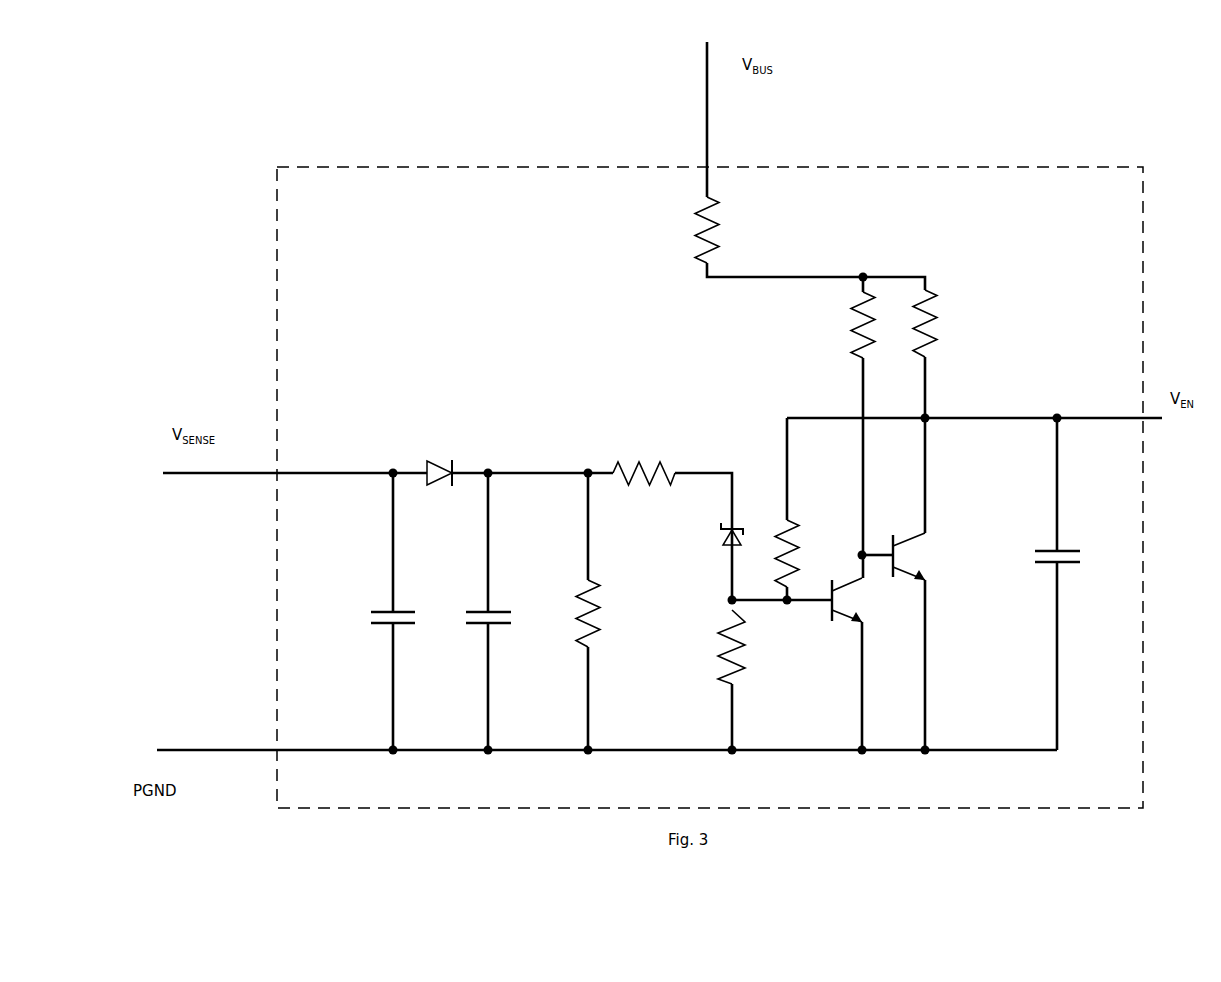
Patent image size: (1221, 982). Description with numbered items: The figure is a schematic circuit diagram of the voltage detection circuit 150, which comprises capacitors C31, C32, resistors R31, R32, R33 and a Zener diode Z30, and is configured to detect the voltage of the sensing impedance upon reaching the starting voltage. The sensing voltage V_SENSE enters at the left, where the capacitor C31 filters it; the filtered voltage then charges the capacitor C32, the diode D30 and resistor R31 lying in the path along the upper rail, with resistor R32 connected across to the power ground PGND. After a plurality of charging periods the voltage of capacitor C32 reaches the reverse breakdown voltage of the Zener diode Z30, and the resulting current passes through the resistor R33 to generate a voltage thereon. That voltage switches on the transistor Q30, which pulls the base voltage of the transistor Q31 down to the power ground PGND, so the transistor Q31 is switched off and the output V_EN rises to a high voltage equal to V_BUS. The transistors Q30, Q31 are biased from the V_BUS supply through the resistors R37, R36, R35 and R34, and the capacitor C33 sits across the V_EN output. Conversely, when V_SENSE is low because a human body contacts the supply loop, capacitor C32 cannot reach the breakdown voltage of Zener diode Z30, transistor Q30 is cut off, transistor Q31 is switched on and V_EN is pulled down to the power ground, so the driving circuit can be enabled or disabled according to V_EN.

The voltage detection circuit 150 is at (472, 130).
The resistor R37 is at (731, 230).
The resistor R36 is at (837, 325).
The resistor R35 is at (950, 323).
The resistor R34 is at (807, 538).
The resistor R33 is at (712, 659).
The resistor R32 is at (611, 613).
The resistor R31 is at (644, 461).
The diode D30 is at (440, 456).
The Zener diode Z30 is at (709, 536).
The capacitor C31 is at (370, 613).
The capacitor C32 is at (474, 638).
The capacitor C33 is at (1081, 578).
The transistor Q30 is at (824, 610).
The transistor Q31 is at (928, 556).